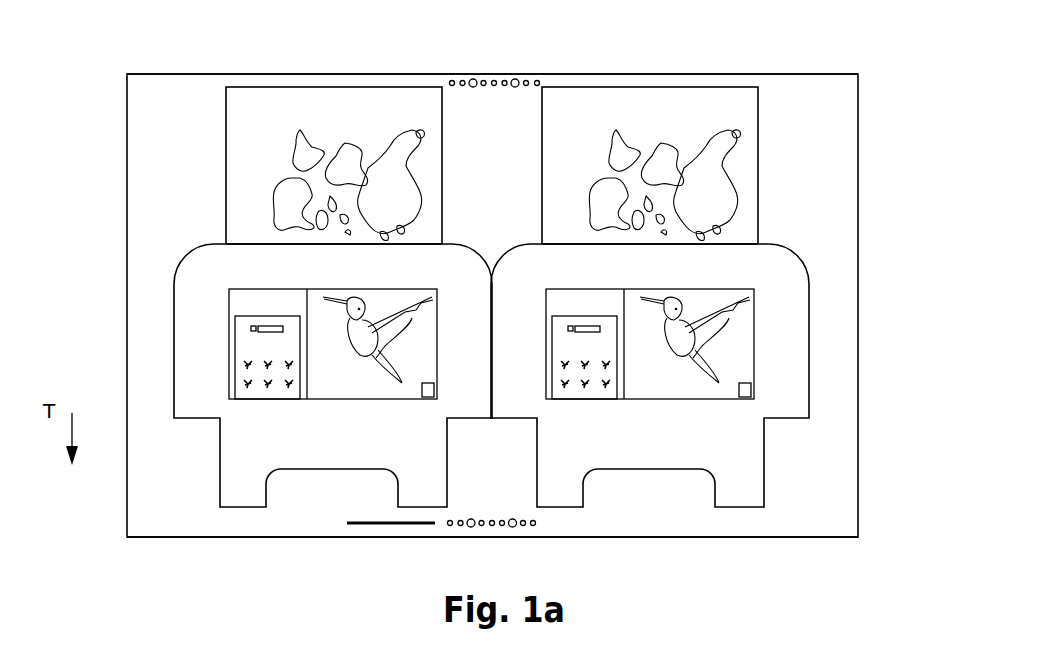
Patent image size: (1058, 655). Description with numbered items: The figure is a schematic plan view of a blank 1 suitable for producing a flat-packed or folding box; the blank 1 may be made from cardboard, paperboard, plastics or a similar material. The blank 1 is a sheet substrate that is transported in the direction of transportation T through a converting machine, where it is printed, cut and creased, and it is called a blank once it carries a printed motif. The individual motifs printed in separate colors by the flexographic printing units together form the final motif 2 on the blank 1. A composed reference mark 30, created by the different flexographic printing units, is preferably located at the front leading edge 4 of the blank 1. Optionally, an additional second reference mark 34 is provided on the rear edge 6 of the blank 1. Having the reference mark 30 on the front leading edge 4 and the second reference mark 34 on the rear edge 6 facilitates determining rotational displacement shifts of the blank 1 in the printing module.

The blank 1 is at (765, 48).
The final motif 2 is at (777, 308).
The front leading edge 4 is at (229, 538).
The rear edge 6 is at (628, 74).
The reference mark 30 is at (523, 543).
The second reference mark 34 is at (508, 68).